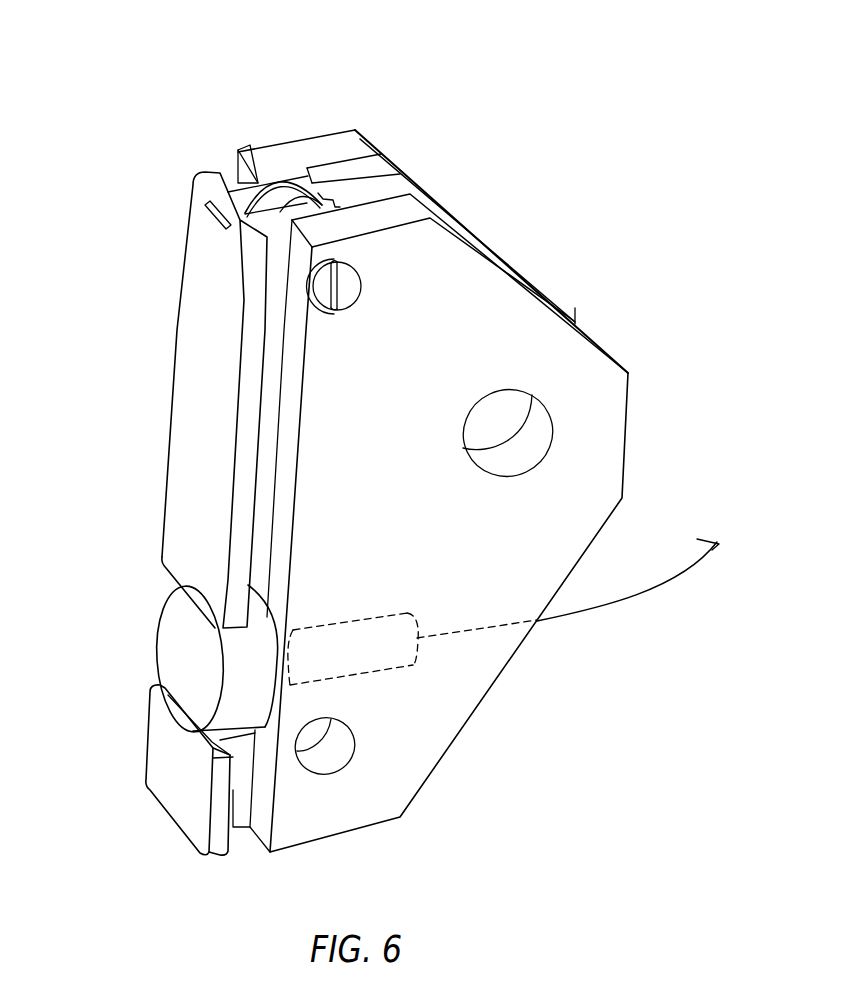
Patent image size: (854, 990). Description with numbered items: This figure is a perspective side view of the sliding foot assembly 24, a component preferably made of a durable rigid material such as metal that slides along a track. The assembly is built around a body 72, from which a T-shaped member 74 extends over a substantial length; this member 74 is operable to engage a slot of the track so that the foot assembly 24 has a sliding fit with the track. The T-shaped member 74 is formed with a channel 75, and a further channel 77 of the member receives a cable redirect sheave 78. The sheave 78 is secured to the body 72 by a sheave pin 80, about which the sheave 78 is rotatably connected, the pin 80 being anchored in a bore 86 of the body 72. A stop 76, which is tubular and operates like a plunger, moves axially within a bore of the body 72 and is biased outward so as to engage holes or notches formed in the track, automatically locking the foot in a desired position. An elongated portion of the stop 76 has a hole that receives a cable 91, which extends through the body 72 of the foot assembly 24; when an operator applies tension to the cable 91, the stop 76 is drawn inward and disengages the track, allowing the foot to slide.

The sliding foot assembly 24 is at (356, 102).
The body 72 is at (457, 700).
The T-shaped member 74 is at (212, 197).
The channel 75 is at (248, 838).
The stop 76 is at (215, 672).
The channel 77 is at (246, 188).
The cable redirect sheave 78 is at (376, 178).
The sheave pin 80 is at (357, 282).
The bore 86 is at (327, 753).
The cable 91 is at (640, 598).